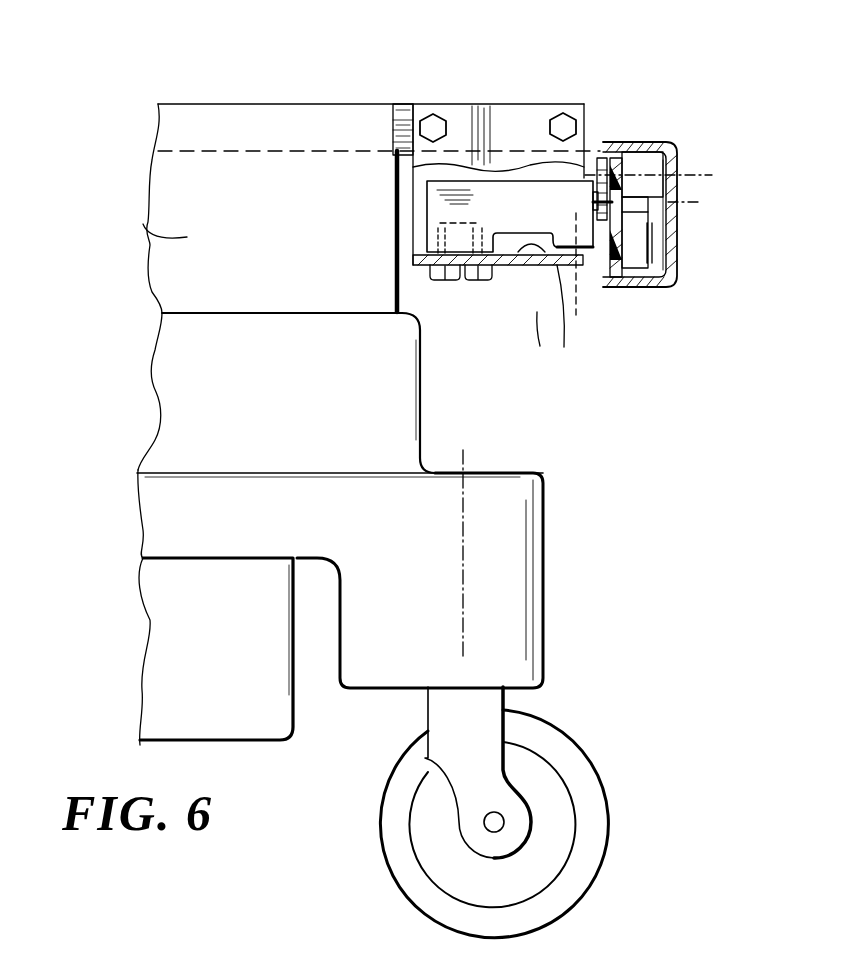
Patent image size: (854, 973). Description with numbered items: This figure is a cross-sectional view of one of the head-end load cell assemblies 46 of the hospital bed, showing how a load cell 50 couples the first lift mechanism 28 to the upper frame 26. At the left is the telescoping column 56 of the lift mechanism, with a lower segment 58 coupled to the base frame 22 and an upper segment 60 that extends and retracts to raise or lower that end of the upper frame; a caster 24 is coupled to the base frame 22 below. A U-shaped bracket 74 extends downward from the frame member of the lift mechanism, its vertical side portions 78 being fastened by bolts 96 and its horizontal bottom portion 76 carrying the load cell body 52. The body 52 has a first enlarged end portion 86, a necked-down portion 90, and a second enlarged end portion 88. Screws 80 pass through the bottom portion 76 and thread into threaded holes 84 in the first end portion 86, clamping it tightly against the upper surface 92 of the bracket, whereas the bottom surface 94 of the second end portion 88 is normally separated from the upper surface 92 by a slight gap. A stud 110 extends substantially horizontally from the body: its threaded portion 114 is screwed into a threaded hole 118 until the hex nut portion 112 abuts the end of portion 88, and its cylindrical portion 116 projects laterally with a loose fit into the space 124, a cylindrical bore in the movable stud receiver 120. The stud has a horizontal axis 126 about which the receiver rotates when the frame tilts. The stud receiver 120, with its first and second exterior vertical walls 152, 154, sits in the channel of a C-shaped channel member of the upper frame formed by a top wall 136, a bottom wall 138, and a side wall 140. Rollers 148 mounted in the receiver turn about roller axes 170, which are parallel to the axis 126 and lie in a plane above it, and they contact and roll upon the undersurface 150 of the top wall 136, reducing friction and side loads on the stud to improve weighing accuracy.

The base frame 22 is at (503, 574).
The casters 24 is at (497, 805).
The upper frame 26 is at (632, 300).
The first lift mechanism 28 is at (133, 389).
The first pair of load cell assemblies 46 is at (547, 315).
The load cell 50 is at (509, 172).
The load cell body 52 is at (428, 200).
The telescoping column 56 is at (226, 347).
The lower segment 58 is at (172, 453).
The upper segment 60 is at (135, 227).
The bracket 74 is at (511, 285).
The horizontal bottom portion 76 is at (534, 266).
The vertical side portions 78 is at (517, 113).
The bolts or screws 80 is at (472, 283).
The threaded holes 84 is at (425, 222).
The first enlarged end portion 86 is at (457, 183).
The second enlarged end portion 88 is at (573, 187).
The necked-down portion 90 is at (489, 187).
The upper surfaces 92 is at (556, 320).
The bottom surface 94 is at (600, 236).
The bolts 96 is at (425, 118).
The stud 110 is at (603, 275).
The hex nut portion 112 is at (592, 205).
The threaded portion 114 is at (577, 203).
The cylindrical portion 116 is at (668, 232).
The threaded hole 118 is at (587, 278).
The movable stud receiver 120 is at (675, 255).
The space 124 is at (653, 207).
The axis 126 is at (685, 203).
The top wall 136 is at (628, 142).
The bottom wall 138 is at (643, 287).
The side wall 140 is at (677, 157).
The rollers 148 is at (641, 140).
The undersurface 150 is at (673, 145).
The first exterior vertical wall 152 is at (650, 290).
The second exterior vertical wall 154 is at (678, 279).
The roller axis 170 is at (703, 172).